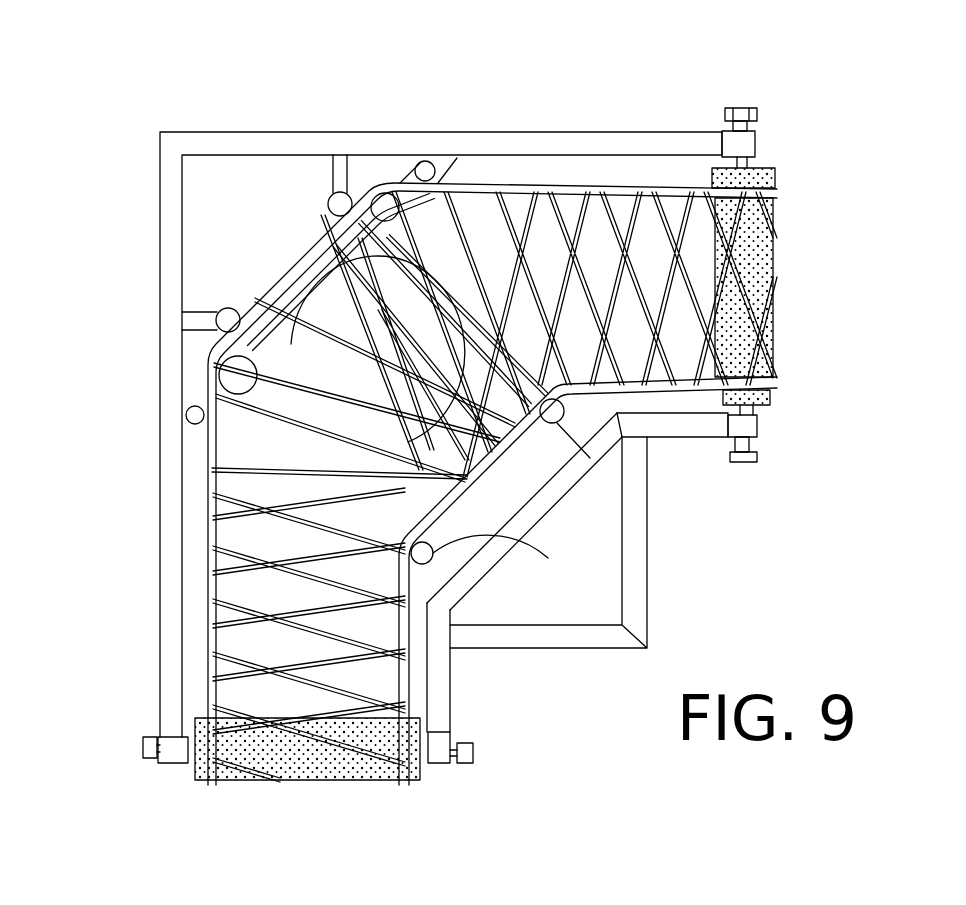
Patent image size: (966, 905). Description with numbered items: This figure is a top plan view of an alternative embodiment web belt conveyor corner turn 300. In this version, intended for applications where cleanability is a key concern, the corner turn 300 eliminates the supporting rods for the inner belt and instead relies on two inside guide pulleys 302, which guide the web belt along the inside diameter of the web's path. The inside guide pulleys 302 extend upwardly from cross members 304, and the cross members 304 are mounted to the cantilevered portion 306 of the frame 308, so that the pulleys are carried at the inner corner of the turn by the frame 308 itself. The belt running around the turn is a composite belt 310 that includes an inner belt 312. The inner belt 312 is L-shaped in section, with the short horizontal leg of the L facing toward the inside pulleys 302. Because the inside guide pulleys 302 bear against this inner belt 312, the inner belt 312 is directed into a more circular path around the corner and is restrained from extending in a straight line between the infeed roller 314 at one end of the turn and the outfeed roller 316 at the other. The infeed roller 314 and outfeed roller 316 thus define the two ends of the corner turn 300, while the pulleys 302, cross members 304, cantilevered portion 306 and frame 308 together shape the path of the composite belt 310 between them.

The web belt conveyor corner turn 300 is at (731, 84).
The inside guide pulleys 302 is at (550, 418).
The cross members 304 is at (458, 612).
The cantilevered portion 306 is at (693, 438).
The frame 308 is at (160, 502).
The composite belt 310 is at (213, 587).
The inner belt 312 is at (407, 657).
The infeed roller 314 is at (367, 775).
The outfeed roller 316 is at (773, 240).